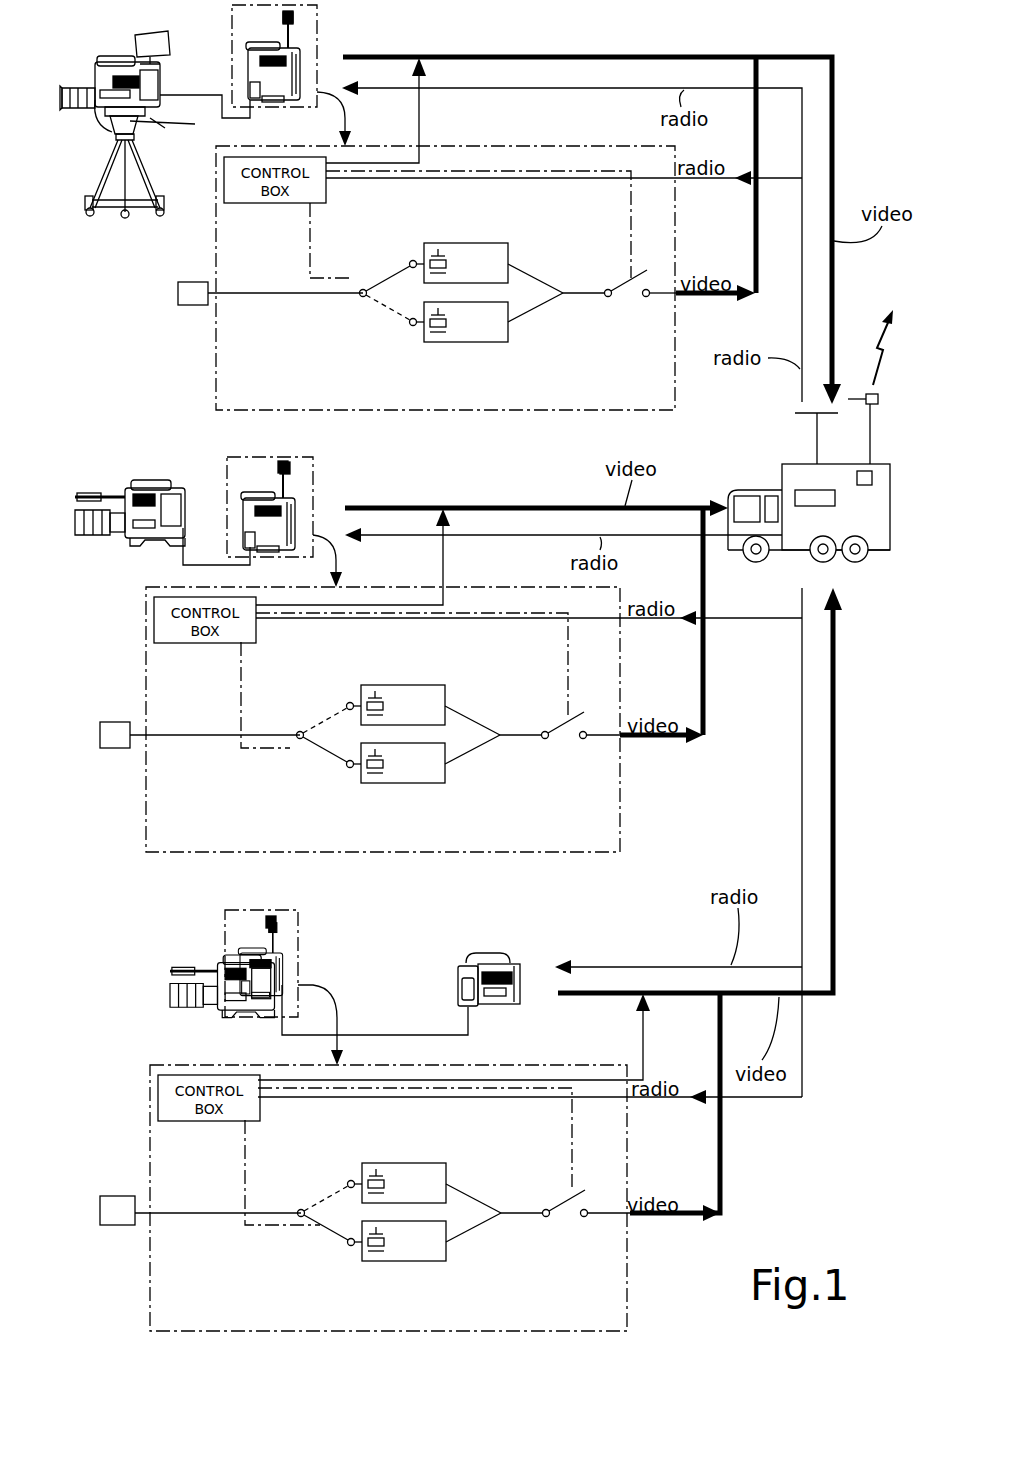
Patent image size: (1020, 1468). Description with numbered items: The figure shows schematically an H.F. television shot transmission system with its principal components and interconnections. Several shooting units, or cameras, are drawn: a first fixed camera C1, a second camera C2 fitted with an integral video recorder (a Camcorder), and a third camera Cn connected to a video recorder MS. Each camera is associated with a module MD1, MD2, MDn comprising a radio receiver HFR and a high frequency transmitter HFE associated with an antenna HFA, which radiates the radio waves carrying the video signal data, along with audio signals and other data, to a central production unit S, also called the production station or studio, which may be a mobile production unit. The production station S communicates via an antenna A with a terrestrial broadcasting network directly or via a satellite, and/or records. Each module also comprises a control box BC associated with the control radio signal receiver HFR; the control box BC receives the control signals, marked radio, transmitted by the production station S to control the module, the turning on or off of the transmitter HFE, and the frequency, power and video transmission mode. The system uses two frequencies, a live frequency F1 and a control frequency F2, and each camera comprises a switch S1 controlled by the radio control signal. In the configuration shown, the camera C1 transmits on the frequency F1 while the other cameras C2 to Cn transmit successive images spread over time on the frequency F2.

The module MD1 is at (242, 17).
The module MD2 is at (260, 467).
The module MDn is at (258, 916).
The radio receiver HFR is at (253, 50).
The high frequency transmitter HFE is at (300, 70).
The antenna HFA is at (296, 14).
The control box BC is at (250, 203).
The camera C1 is at (160, 246).
The camera C2 is at (130, 600).
The camera Cn is at (132, 1068).
The switch S1 is at (487, 754).
The live frequency F1 is at (434, 723).
The control frequency F2 is at (434, 781).
The video recorder MS is at (490, 960).
The production station S is at (890, 510).
The antenna A is at (873, 436).